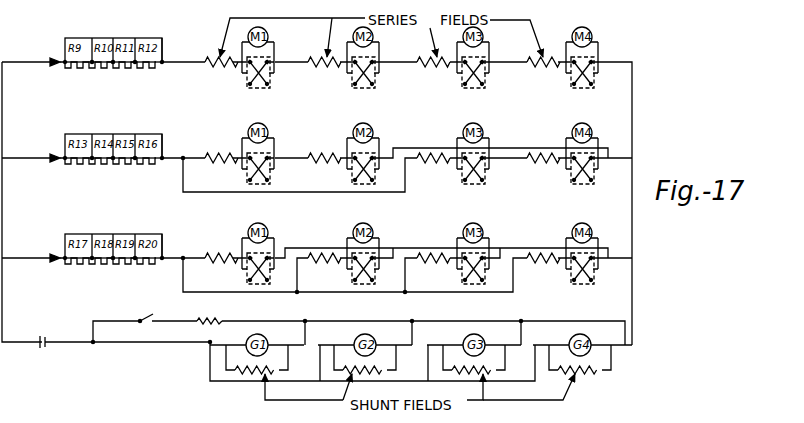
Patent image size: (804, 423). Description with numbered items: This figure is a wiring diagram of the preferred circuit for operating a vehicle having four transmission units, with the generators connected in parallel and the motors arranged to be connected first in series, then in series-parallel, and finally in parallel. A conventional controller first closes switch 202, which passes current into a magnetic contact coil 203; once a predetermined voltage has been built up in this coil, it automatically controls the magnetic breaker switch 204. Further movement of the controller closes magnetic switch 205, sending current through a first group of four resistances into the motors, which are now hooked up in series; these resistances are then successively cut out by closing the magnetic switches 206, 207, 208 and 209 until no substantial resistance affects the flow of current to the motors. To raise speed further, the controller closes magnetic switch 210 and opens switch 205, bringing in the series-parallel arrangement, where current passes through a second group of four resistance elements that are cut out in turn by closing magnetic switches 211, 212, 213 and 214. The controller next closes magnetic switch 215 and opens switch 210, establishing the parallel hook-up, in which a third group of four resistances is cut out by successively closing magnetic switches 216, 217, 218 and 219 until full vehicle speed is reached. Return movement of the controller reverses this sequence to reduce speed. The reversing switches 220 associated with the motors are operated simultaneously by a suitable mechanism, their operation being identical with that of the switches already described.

The switch 202 is at (142, 318).
The magnetic contact coil 203 is at (219, 323).
The magnetic breaker switch 204 is at (43, 346).
The magnetic switch 205 is at (56, 59).
The magnetic switch 206 is at (92, 42).
The magnetic switch 207 is at (113, 38).
The magnetic switch 208 is at (136, 38).
The magnetic switch 209 is at (164, 40).
The magnetic switch 210 is at (56, 155).
The magnetic switch 211 is at (91, 136).
The magnetic switch 212 is at (113, 134).
The magnetic switch 213 is at (136, 134).
The magnetic switch 214 is at (164, 136).
The magnetic switch 215 is at (56, 255).
The magnetic switch 216 is at (91, 236).
The magnetic switch 217 is at (112, 234).
The magnetic switch 218 is at (134, 234).
The magnetic switch 219 is at (180, 221).
The reversing switches 220 is at (592, 80).